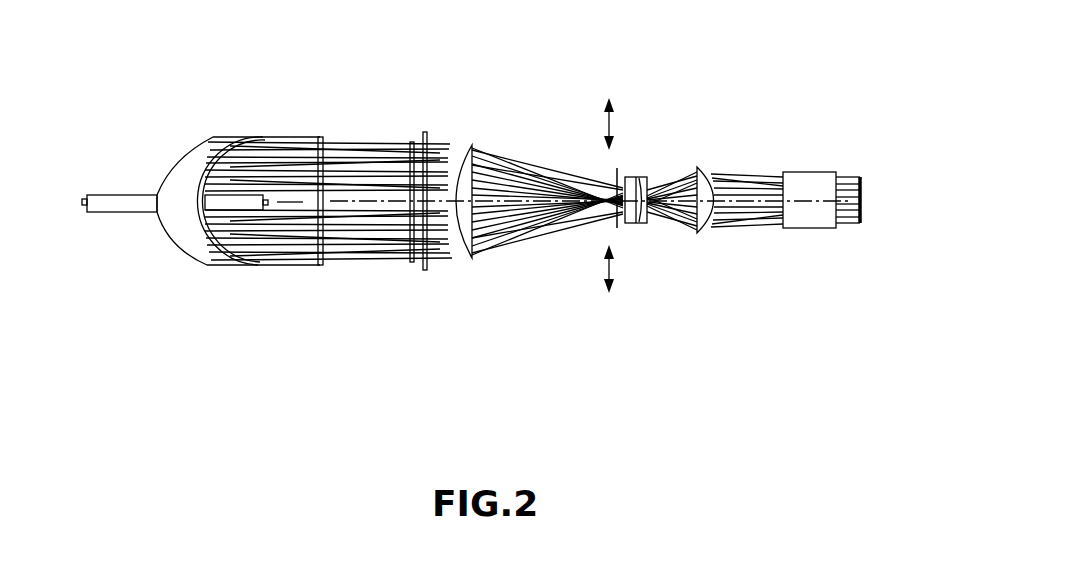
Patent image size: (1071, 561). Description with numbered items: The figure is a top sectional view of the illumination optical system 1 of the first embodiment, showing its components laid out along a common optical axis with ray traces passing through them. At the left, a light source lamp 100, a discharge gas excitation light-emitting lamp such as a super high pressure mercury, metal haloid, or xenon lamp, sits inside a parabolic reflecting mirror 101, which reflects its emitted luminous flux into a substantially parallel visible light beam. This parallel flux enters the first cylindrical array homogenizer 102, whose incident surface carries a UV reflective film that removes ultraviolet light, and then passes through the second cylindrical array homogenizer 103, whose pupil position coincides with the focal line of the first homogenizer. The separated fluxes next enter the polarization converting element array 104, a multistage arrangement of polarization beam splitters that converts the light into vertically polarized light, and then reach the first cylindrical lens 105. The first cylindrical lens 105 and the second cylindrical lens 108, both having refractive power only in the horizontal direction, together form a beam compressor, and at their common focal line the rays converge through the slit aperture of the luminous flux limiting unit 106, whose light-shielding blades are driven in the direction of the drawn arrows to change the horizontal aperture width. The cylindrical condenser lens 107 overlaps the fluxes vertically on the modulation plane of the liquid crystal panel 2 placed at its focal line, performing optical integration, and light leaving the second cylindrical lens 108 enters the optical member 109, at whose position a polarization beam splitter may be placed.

The illumination optical system 1 is at (330, 376).
The liquid crystal panel 2 is at (857, 176).
The light source lamp 100 is at (108, 206).
The parabolic reflecting mirror 101 is at (219, 258).
The first cylindrical array homogenizer 102 is at (320, 265).
The second cylindrical array homogenizer 103 is at (412, 262).
The polarization converting element array 104 is at (427, 270).
The first cylindrical lens 105 is at (468, 146).
The luminous flux limiting unit 106 is at (614, 177).
The cylindrical condenser lens 107 is at (638, 223).
The second cylindrical lens 108 is at (699, 232).
The optical member 109 is at (805, 180).